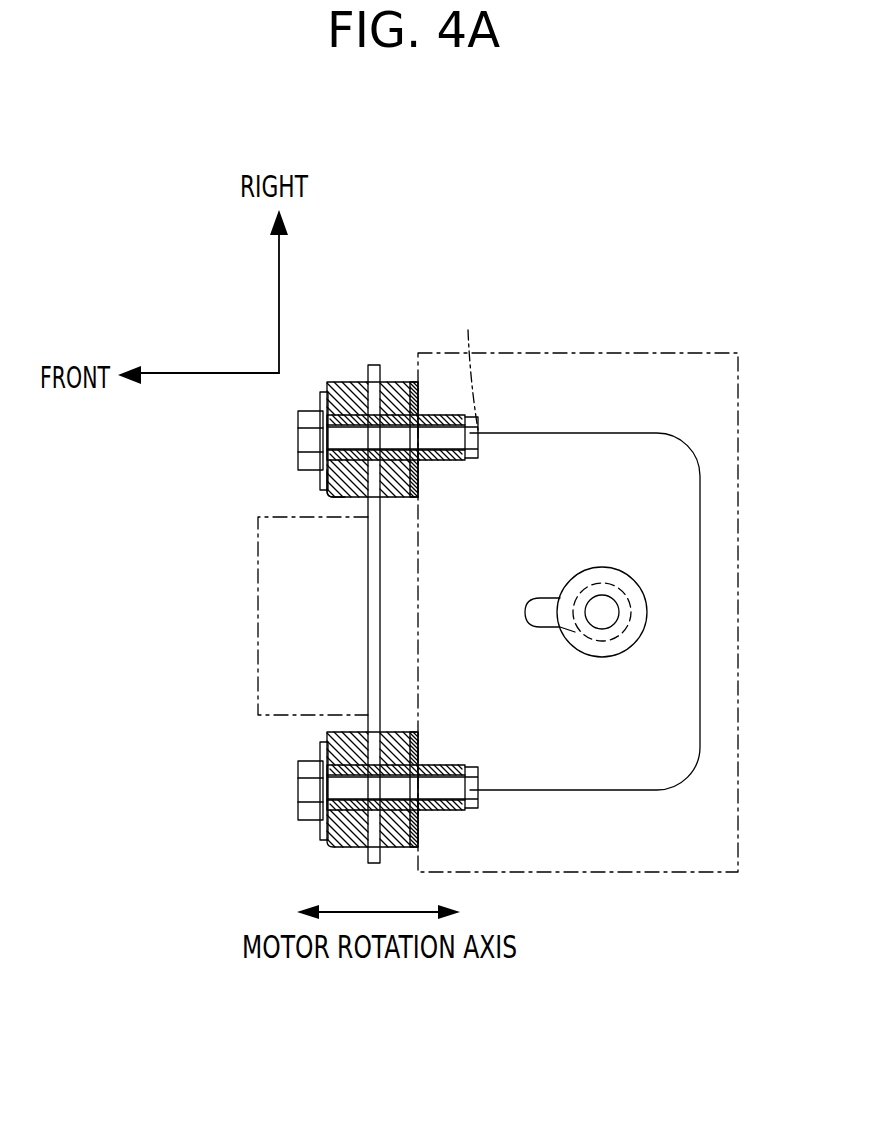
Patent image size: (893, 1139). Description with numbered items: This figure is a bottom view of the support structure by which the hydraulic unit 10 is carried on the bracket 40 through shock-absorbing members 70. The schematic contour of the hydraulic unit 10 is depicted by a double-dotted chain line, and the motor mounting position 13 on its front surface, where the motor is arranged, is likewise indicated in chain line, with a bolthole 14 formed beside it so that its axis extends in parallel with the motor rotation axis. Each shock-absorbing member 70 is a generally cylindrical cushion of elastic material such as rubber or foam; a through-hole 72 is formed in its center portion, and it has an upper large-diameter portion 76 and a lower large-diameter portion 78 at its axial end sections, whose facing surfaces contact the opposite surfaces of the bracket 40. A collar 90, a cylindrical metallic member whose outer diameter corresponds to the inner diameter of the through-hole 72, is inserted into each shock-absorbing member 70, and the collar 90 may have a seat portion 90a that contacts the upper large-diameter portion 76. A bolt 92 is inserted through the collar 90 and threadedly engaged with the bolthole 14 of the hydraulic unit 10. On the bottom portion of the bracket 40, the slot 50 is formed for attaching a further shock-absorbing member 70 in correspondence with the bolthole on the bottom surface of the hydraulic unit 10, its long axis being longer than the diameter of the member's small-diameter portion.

The hydraulic unit 10 is at (700, 333).
The motor mounting position 13 is at (247, 558).
The bolthole 14 is at (470, 358).
The bracket 40 is at (538, 412).
The slot 50 is at (520, 645).
The shock-absorbing member 70 is at (428, 510).
The through-hole 72 is at (393, 380).
The upper large-diameter portion 76 is at (420, 505).
The lower large-diameter portion 78 is at (327, 493).
The collar 90 is at (420, 465).
The seat portion 90a is at (420, 492).
The bolt 92 is at (298, 442).